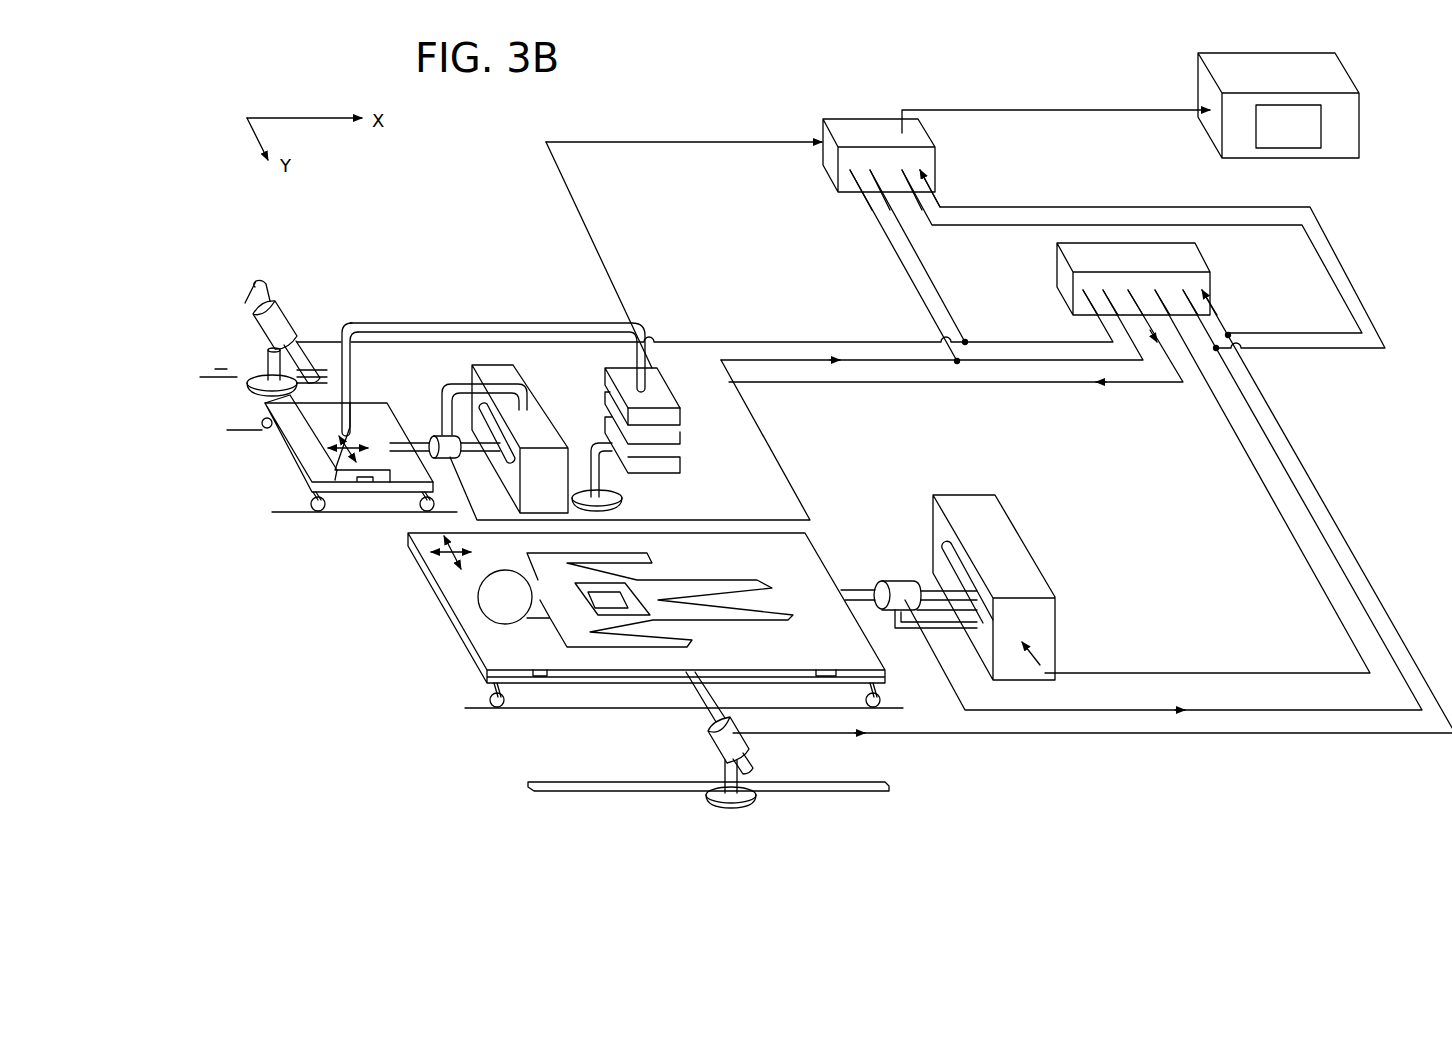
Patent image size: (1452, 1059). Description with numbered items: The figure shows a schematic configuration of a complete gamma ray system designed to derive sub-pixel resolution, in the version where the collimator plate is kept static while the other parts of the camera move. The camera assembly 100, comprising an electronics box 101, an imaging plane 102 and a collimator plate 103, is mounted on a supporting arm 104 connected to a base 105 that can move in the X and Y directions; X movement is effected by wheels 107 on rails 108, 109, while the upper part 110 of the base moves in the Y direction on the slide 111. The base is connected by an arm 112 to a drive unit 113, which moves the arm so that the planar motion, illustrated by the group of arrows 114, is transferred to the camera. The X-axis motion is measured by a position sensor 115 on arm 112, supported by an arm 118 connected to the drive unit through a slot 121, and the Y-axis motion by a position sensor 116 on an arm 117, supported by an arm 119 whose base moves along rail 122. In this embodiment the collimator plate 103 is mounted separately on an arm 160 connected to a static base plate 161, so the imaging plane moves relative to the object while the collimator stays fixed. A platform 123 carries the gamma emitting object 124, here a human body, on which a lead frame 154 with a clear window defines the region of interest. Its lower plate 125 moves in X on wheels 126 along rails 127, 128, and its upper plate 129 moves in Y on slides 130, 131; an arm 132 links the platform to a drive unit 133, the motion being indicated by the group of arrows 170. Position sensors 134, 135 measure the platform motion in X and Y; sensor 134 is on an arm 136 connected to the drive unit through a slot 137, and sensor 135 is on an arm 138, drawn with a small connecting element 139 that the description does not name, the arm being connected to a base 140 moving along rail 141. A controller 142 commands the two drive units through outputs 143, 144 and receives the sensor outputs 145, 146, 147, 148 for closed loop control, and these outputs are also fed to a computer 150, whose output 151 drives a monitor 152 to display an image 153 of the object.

The camera assembly 100 is at (614, 372).
The electronics box 101 is at (674, 416).
The imaging plane 102 is at (680, 440).
The collimator plate 103 is at (680, 466).
The supporting arm 104 is at (495, 323).
The base 105 is at (357, 403).
The wheels 107 is at (318, 511).
The rail 108 is at (272, 512).
The rail 109 is at (235, 430).
The upper part of base 110 is at (350, 435).
The slide 111 is at (368, 484).
The arm 112 is at (410, 450).
The drive unit 113 is at (485, 362).
The group of arrows 114 is at (333, 442).
The position sensor 115 is at (440, 433).
The position sensor 116 is at (262, 322).
The arm 117 is at (256, 293).
The arm 118 is at (485, 384).
The arm 119 is at (270, 360).
The slot 121 is at (530, 428).
The rail 122 is at (215, 372).
The platform 123 is at (467, 613).
The gamma emitting object 124 is at (760, 580).
The lower plate 125 is at (598, 690).
The wheels 126 is at (497, 707).
The rail 127 is at (470, 708).
The rail 128 is at (412, 543).
The upper plate 129 is at (652, 675).
The slide 130 is at (540, 683).
The slide 131 is at (830, 675).
The arm 132 is at (914, 582).
The drive unit 133 is at (1007, 530).
The position sensor 134 is at (890, 584).
The position sensor 135 is at (715, 740).
The arm 136 is at (943, 628).
The slot 137 is at (983, 710).
The arm 138 is at (748, 802).
The connector 139 is at (757, 765).
The base 140 is at (720, 798).
The rail 141 is at (530, 783).
The controller 142 is at (1062, 265).
The output 143 is at (1061, 382).
The output 144 is at (1256, 470).
The output 145 is at (903, 361).
The output 146 is at (823, 342).
The output 147 is at (1269, 438).
The output 148 is at (1272, 408).
The computer 150 is at (870, 110).
The output 151 is at (1145, 108).
The monitor 152 is at (1305, 55).
The image 153 is at (1315, 120).
The frame 154 is at (580, 595).
The arm 160 is at (610, 477).
The static base plate 161 is at (622, 497).
The group of arrows 170 is at (437, 558).